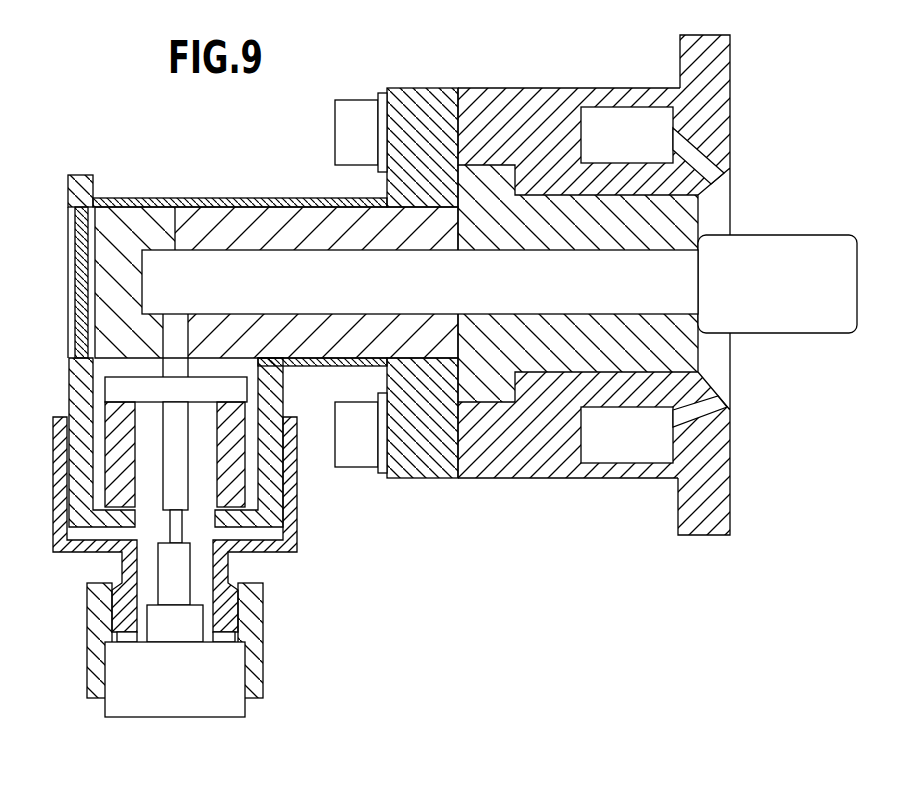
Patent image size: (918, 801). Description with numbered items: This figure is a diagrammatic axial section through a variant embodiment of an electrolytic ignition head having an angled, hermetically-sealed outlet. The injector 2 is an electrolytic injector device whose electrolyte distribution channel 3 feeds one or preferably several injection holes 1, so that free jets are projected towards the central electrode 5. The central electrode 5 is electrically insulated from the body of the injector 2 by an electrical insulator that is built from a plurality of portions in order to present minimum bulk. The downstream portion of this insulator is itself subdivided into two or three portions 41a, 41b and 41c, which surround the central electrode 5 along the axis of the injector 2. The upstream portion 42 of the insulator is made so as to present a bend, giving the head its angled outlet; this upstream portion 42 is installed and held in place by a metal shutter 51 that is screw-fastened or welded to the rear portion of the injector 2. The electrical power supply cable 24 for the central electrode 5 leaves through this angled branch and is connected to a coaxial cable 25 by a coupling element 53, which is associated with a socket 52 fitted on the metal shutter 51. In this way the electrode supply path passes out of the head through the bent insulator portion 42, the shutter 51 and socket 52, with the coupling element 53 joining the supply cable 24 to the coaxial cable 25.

The injection hole 1 is at (730, 180).
The injector 2 is at (523, 120).
The electrolyte distribution channel 3 is at (628, 127).
The central electrode 5 is at (830, 257).
The electrical power supply cable 24 is at (177, 572).
The coaxial cable 25 is at (143, 683).
The downstream insulator portion 41a is at (130, 232).
The downstream insulator portion 41b is at (253, 233).
The downstream insulator portion 41c is at (653, 330).
The upstream portion of the insulator 42 is at (117, 443).
The metal shutter 51 is at (72, 373).
The socket 52 is at (297, 533).
The coupling element 53 is at (255, 647).